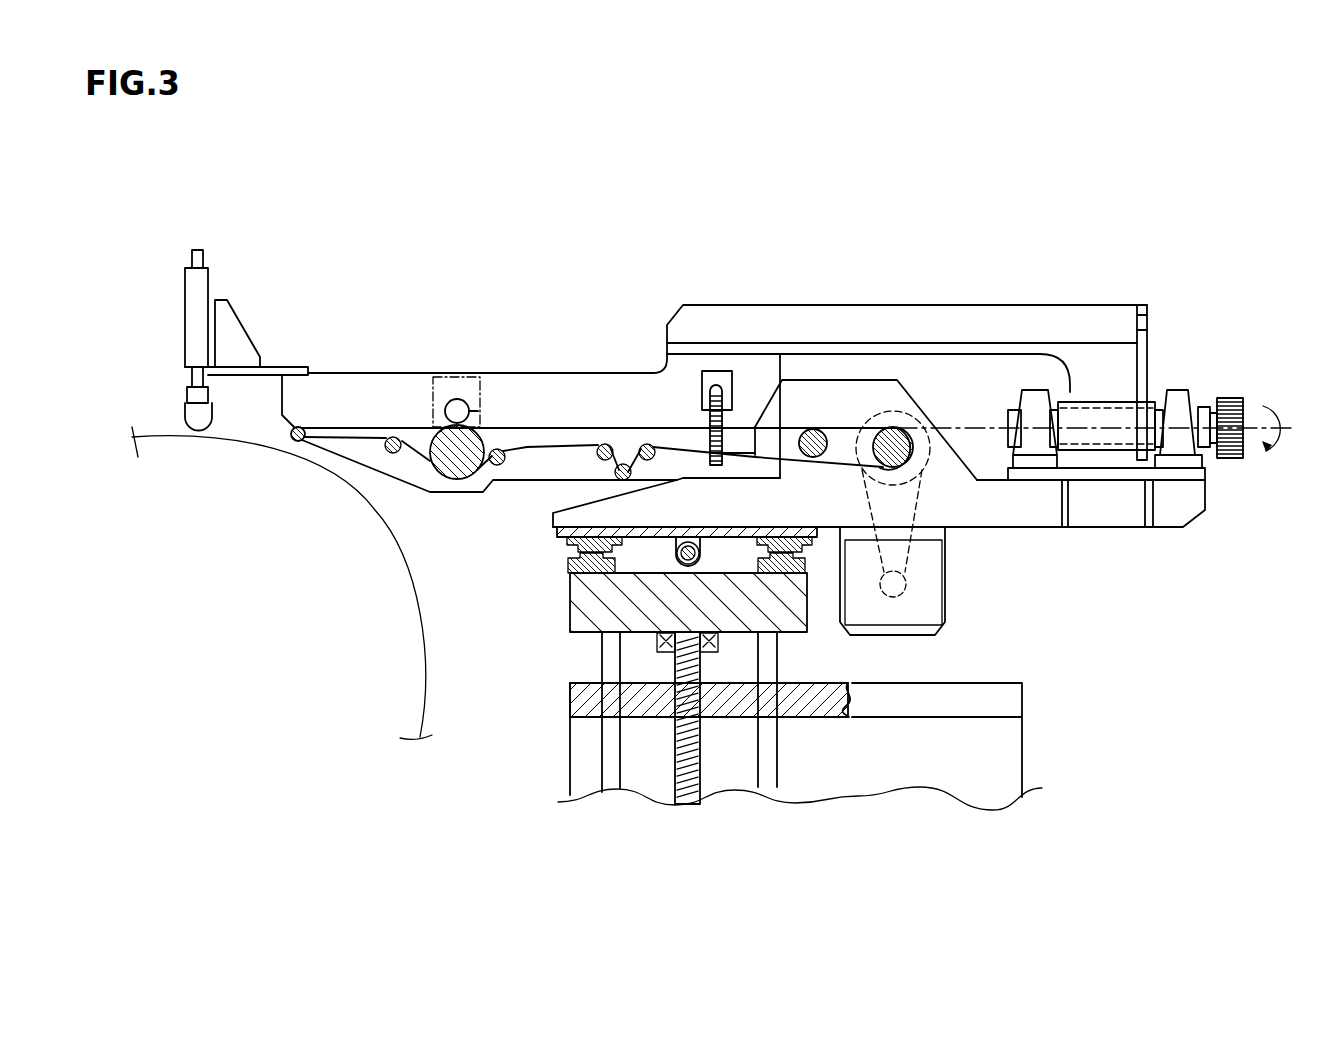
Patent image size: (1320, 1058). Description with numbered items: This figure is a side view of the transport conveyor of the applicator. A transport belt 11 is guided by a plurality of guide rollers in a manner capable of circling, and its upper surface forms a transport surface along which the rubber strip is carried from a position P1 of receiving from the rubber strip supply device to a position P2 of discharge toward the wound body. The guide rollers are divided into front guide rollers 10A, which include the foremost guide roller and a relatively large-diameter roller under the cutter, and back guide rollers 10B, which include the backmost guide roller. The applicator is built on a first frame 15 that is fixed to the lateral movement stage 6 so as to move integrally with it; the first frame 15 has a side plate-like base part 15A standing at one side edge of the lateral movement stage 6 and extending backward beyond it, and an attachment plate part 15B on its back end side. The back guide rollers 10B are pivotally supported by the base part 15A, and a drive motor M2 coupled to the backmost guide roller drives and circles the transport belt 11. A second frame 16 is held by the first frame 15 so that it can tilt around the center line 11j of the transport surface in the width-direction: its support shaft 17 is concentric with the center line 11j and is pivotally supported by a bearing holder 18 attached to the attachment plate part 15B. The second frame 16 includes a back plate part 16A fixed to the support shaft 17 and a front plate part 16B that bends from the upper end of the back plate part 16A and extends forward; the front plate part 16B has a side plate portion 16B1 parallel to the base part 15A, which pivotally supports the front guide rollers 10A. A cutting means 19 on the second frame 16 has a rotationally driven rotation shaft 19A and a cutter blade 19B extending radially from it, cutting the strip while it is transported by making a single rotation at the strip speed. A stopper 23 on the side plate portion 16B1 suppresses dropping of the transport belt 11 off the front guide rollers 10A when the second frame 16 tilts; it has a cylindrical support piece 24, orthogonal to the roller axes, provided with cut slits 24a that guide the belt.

The transport belt 11 is at (560, 427).
The second frame 16 is at (1137, 172).
The back plate part 16A is at (1160, 327).
The front plate part 16B is at (975, 345).
The side plate portion 16B1 is at (608, 392).
The stopper 23 is at (697, 360).
The support piece 24 is at (717, 380).
The cut slits 24a is at (738, 402).
The cutting means 19 is at (427, 354).
The rotation shaft 19A is at (457, 398).
The cutter blade 19B is at (476, 412).
The position of discharge P2 is at (298, 416).
The position of receiving P1 is at (890, 408).
The front guide rollers 10A is at (293, 438).
The back guide rollers 10B is at (813, 450).
The drive motor M2 is at (947, 598).
The first frame 15 is at (1265, 603).
The base part 15A is at (1007, 507).
The attachment plate part 15B is at (1097, 460).
The support shaft 17 is at (1123, 408).
The bearing holder 18 is at (1183, 393).
The center line of the transport surface 11j is at (1253, 430).
The lateral movement stage 6 is at (738, 535).